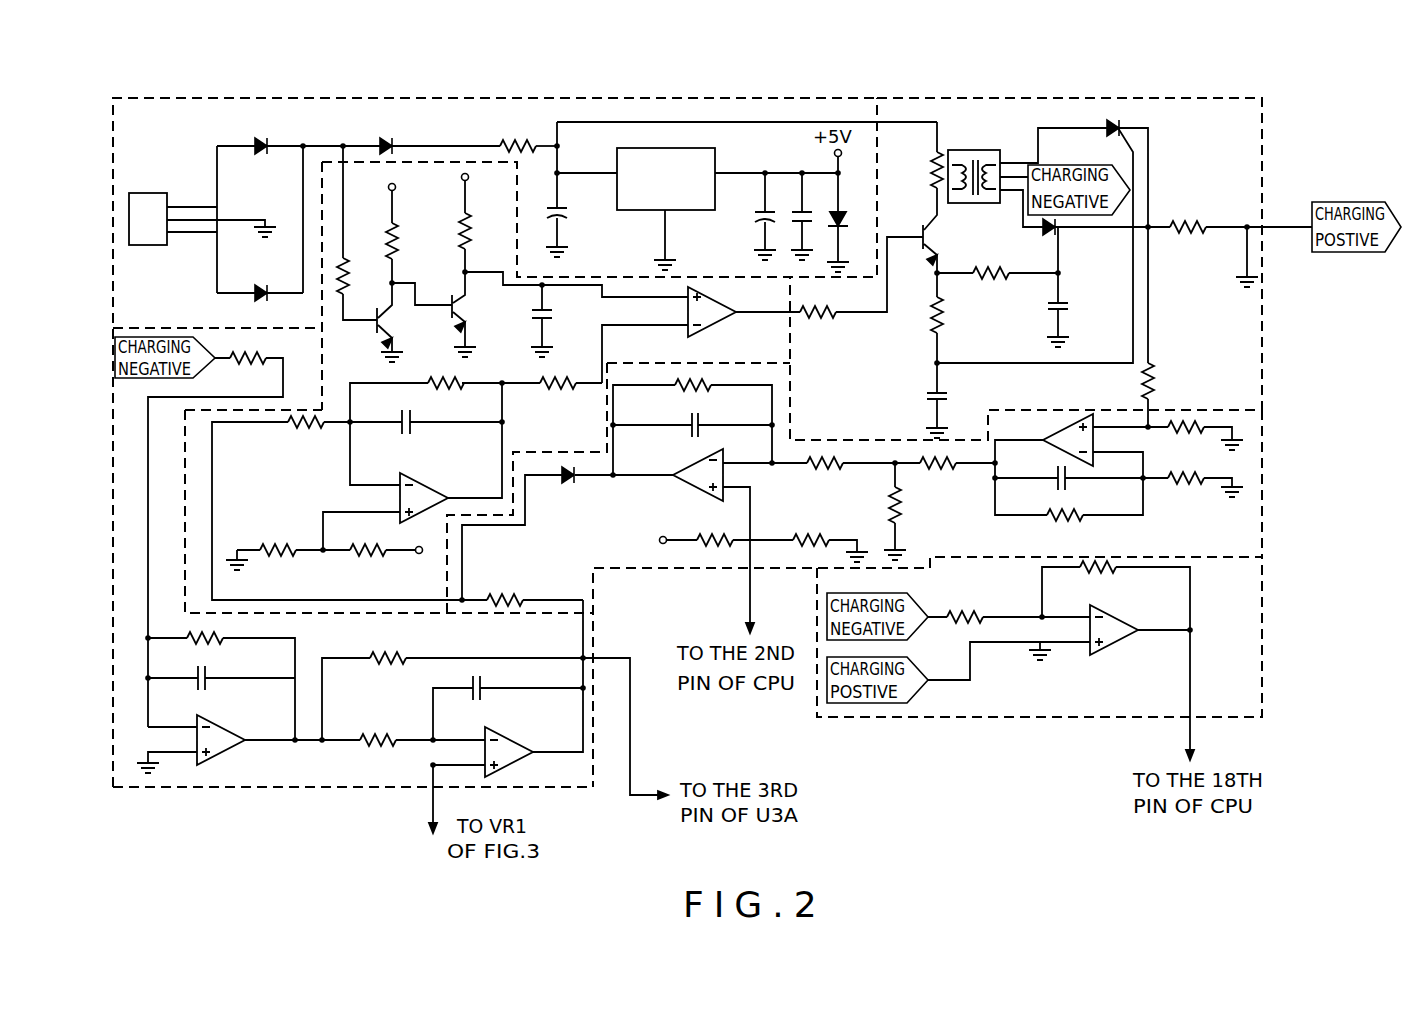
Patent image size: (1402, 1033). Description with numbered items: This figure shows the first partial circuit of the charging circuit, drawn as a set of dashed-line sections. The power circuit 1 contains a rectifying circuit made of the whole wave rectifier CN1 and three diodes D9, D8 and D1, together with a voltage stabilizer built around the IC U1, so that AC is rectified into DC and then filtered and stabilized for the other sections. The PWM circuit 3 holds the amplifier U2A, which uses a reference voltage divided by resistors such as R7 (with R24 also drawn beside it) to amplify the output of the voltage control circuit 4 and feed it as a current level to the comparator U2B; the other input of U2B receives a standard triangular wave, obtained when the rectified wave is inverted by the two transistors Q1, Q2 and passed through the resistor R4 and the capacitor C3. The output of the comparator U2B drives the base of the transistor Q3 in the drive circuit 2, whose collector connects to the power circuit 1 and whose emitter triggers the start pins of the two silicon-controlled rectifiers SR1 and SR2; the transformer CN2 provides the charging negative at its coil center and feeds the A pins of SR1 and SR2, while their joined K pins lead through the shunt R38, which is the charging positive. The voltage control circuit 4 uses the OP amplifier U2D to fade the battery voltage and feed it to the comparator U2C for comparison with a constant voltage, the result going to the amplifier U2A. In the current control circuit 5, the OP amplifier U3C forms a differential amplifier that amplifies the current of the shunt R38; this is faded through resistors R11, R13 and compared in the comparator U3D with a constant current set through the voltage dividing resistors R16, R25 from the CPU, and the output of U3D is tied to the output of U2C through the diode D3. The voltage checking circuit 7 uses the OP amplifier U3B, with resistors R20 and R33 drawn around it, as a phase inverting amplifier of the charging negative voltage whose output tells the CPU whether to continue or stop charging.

The power circuit 1 is at (338, 108).
The drive circuit 2 is at (1252, 130).
The PWM circuit 3 is at (447, 180).
The voltage control circuit 4 is at (357, 777).
The current control circuit 5 is at (1248, 543).
The voltage checking circuit 7 is at (1245, 638).
The whole wave rectifier CN1 is at (202, 207).
The transformer CN2 is at (974, 162).
The diode D1 is at (388, 133).
The diode D3 is at (568, 490).
The diode D8 is at (261, 280).
The diode D9 is at (265, 133).
The transistor Q1 is at (407, 270).
The transistor Q2 is at (476, 314).
The transistor Q3 is at (915, 197).
The resistor R4 is at (486, 220).
The resistor R7 is at (383, 561).
The resistor R11 is at (957, 475).
The resistor R13 is at (910, 511).
The voltage dividing resistor R16 is at (703, 531).
The resistor R20 is at (985, 605).
The resistor R24 is at (274, 561).
The voltage dividing resistor R25 is at (827, 536).
The resistor R33 is at (1116, 595).
The shunt R38 is at (1189, 215).
The capacitor C3 is at (555, 321).
The IC U1 is at (666, 198).
The amplifier U2A is at (426, 450).
The comparator U2B is at (722, 307).
The comparator U2C is at (507, 716).
The OP amplifier U2D is at (229, 703).
The OP amplifier U3B is at (1118, 678).
The OP amplifier U3C is at (1117, 464).
The comparator U3D is at (692, 440).
The silicon-controlled rectifier SR1 is at (1042, 224).
The silicon-controlled rectifier SR2 is at (1112, 129).